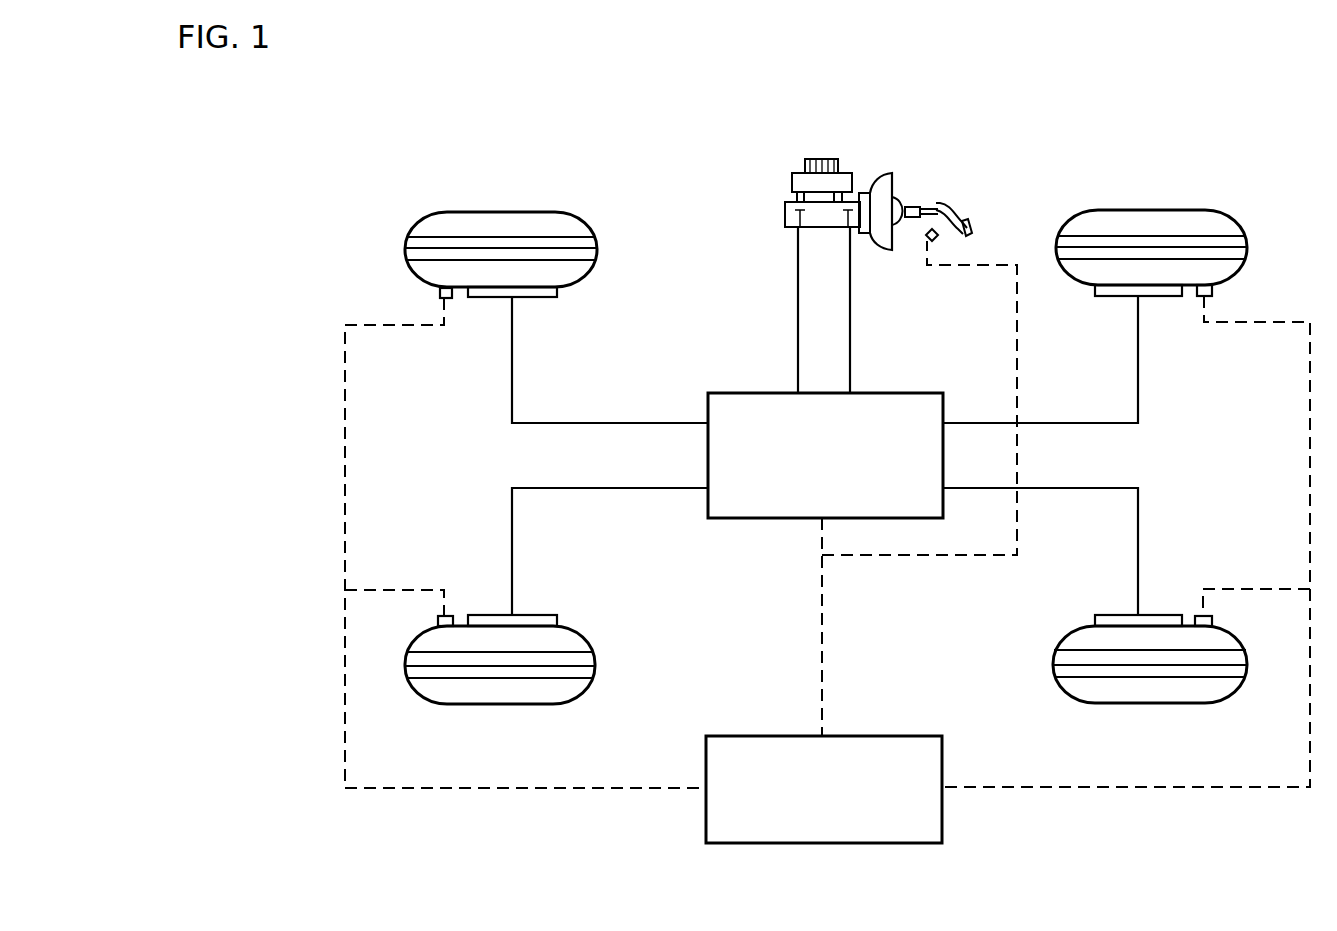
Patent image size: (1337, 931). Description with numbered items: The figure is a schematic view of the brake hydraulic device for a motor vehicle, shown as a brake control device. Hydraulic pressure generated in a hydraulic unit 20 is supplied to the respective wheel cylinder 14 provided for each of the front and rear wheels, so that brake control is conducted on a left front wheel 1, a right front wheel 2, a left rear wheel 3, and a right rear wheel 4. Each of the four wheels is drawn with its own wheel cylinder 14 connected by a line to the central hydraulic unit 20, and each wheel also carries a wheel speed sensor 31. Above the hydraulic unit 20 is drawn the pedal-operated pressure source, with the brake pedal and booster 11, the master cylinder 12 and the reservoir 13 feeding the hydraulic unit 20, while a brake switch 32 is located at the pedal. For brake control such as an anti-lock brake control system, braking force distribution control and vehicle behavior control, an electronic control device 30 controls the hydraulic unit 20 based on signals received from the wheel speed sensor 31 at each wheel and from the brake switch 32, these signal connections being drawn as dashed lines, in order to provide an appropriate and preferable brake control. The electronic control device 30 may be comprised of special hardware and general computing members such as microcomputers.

The left front wheel 1 is at (505, 704).
The right front wheel 2 is at (515, 212).
The left rear wheel 3 is at (1155, 704).
The right rear wheel 4 is at (1165, 212).
The brake pedal with booster 11 is at (958, 212).
The master cylinder 12 is at (784, 212).
The reservoir 13 is at (790, 180).
The wheel cylinder 14 is at (548, 299).
The hydraulic unit 20 is at (745, 520).
The electronic control device 30 is at (870, 845).
The wheel speed sensor 31 is at (447, 299).
The brake switch 32 is at (928, 237).